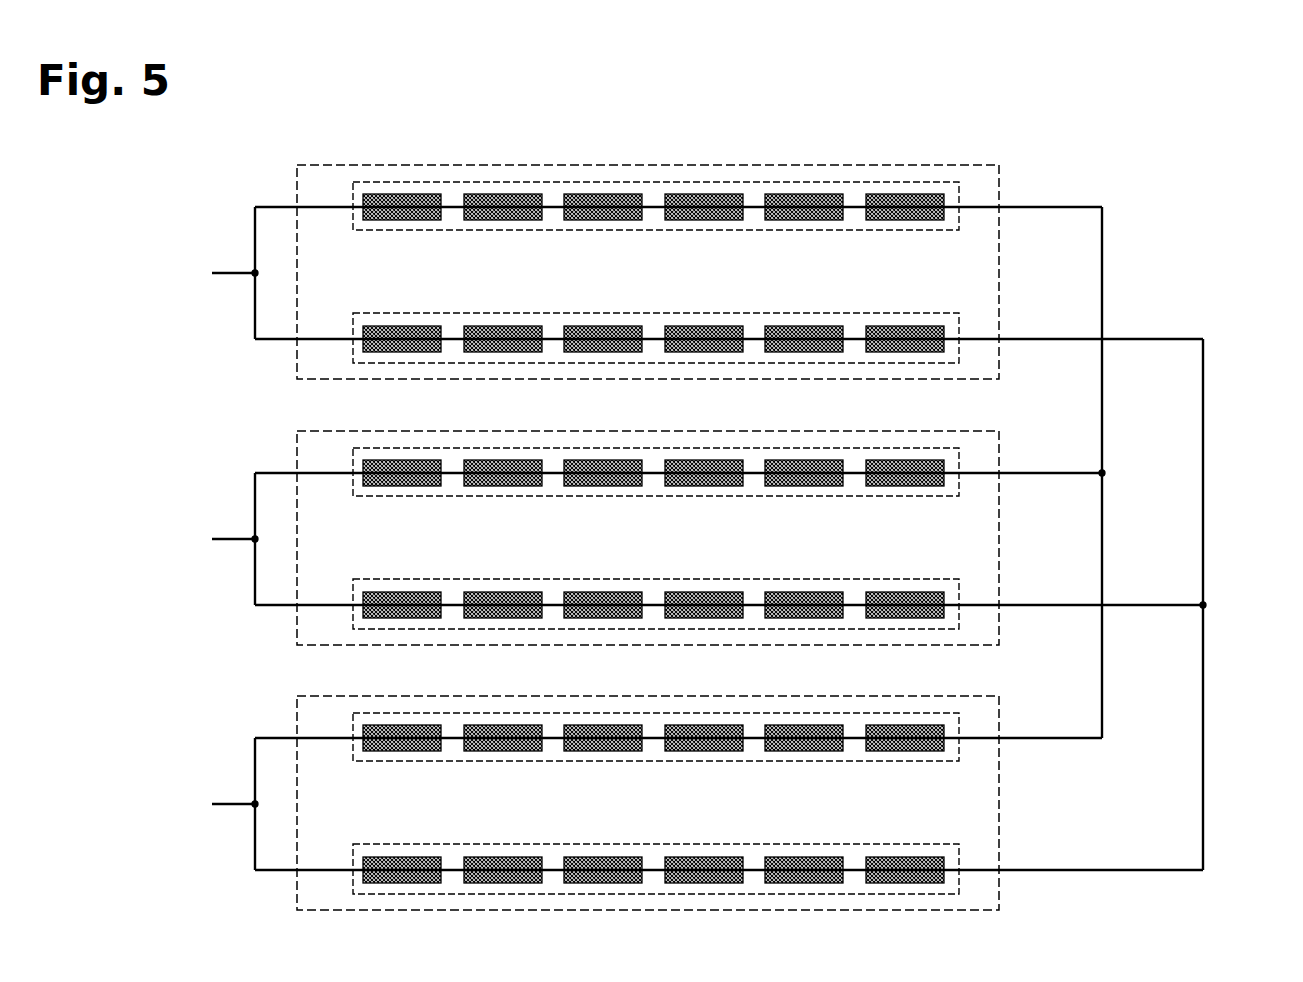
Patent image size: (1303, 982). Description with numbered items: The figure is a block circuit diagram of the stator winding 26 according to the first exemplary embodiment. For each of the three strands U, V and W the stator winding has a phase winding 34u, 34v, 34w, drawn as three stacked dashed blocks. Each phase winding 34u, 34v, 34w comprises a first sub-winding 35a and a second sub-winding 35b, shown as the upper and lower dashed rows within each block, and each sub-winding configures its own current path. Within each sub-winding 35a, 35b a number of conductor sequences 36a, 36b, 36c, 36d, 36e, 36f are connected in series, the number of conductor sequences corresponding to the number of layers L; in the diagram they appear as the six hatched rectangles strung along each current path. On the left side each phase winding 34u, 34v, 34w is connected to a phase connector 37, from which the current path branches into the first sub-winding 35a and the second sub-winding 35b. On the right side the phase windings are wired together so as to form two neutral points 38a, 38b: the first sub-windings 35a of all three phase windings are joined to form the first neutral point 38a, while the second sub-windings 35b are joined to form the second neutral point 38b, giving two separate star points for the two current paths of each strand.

The stator winding 26 is at (1217, 153).
The phase winding 34u is at (949, 164).
The phase winding 34v is at (947, 430).
The phase winding 34w is at (947, 695).
The first sub-winding 35a is at (545, 181).
The second sub-winding 35b is at (558, 312).
The conductor sequence 36a is at (398, 193).
The conductor sequence 36b is at (475, 193).
The conductor sequence 36c is at (612, 193).
The conductor sequence 36d is at (706, 193).
The conductor sequence 36e is at (803, 193).
The conductor sequence 36f is at (903, 193).
The phase connector 37 is at (215, 272).
The first neutral point 38a is at (1102, 473).
The second neutral point 38b is at (1203, 605).